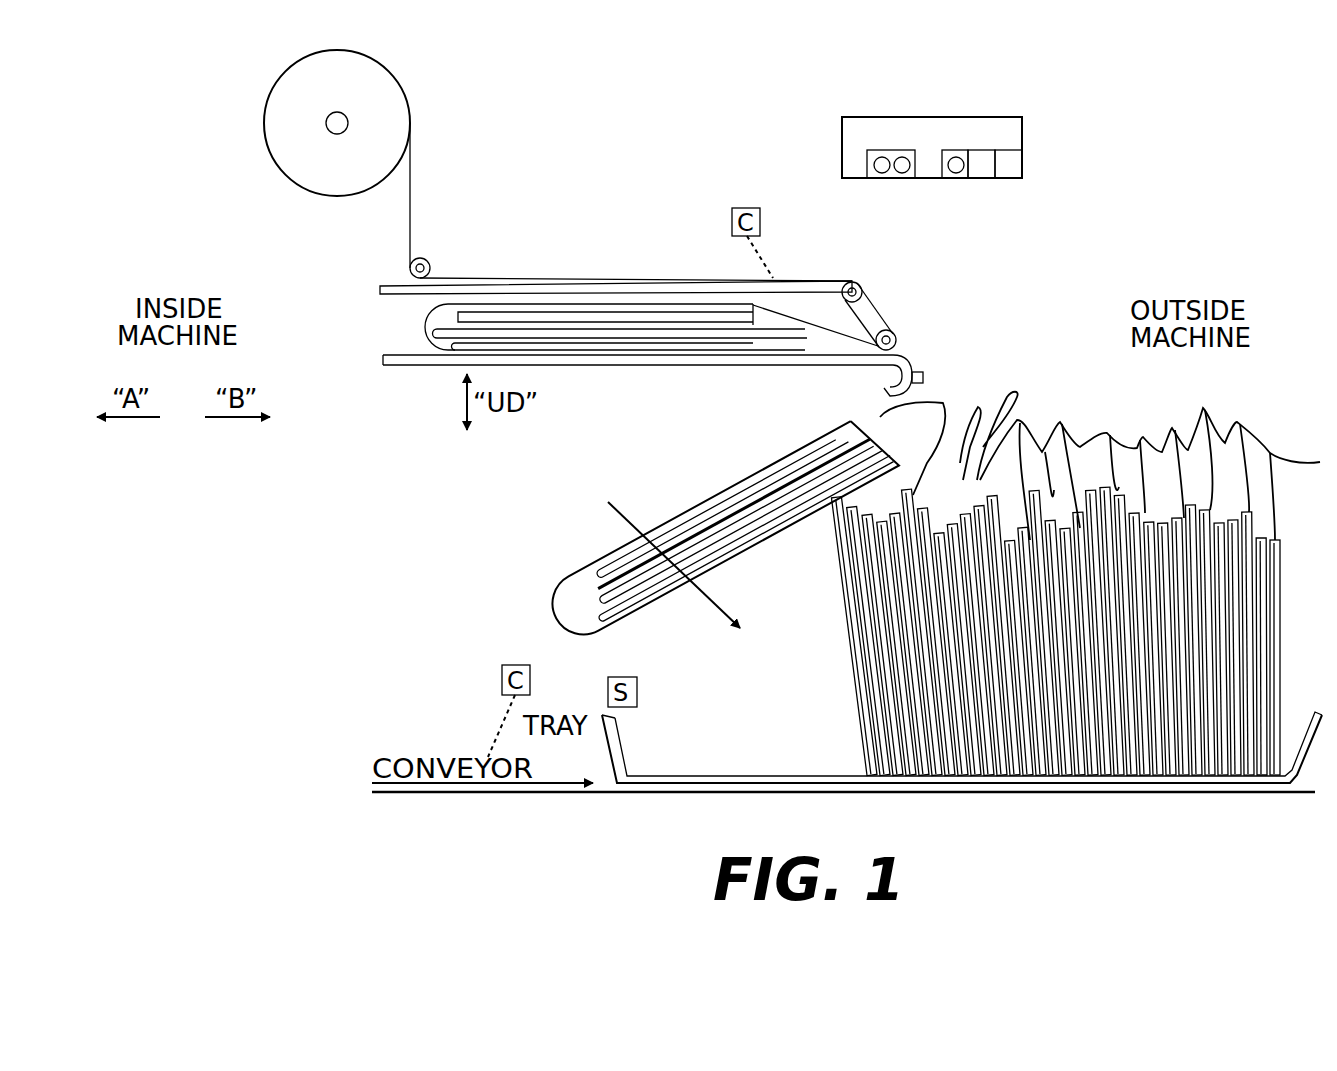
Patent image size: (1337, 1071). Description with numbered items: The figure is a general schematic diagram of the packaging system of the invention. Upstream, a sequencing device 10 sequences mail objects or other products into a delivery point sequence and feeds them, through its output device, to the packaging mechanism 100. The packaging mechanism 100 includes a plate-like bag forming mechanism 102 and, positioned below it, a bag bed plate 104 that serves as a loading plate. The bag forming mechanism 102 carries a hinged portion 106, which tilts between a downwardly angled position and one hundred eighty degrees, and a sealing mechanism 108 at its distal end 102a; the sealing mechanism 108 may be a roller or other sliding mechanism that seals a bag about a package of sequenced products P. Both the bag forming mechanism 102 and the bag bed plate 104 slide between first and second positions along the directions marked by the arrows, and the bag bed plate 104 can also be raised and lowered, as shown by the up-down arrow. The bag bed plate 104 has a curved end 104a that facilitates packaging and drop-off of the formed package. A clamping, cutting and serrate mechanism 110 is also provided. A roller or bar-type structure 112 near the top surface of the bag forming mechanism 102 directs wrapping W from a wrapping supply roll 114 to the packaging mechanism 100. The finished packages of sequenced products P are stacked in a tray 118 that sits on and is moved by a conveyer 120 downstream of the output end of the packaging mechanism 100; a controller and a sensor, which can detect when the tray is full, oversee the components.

The sequencing device 10 is at (968, 133).
The packaging mechanism 100 is at (1035, 248).
The bag forming mechanism 102 is at (380, 289).
The distal end 102a is at (898, 333).
The bag bed plate 104 is at (383, 360).
The curved end 104a is at (910, 366).
The hinged portion 106 is at (863, 288).
The sealing mechanism 108 is at (905, 345).
The clamping, cutting and serrate mechanism 110 is at (925, 378).
The roller or bar-type structure 112 is at (432, 263).
The wrapping supply roll 114 is at (411, 123).
The tray 118 is at (670, 718).
The conveyer 120 is at (578, 794).
The wrapping W is at (411, 190).
The package of sequenced products P is at (583, 316).